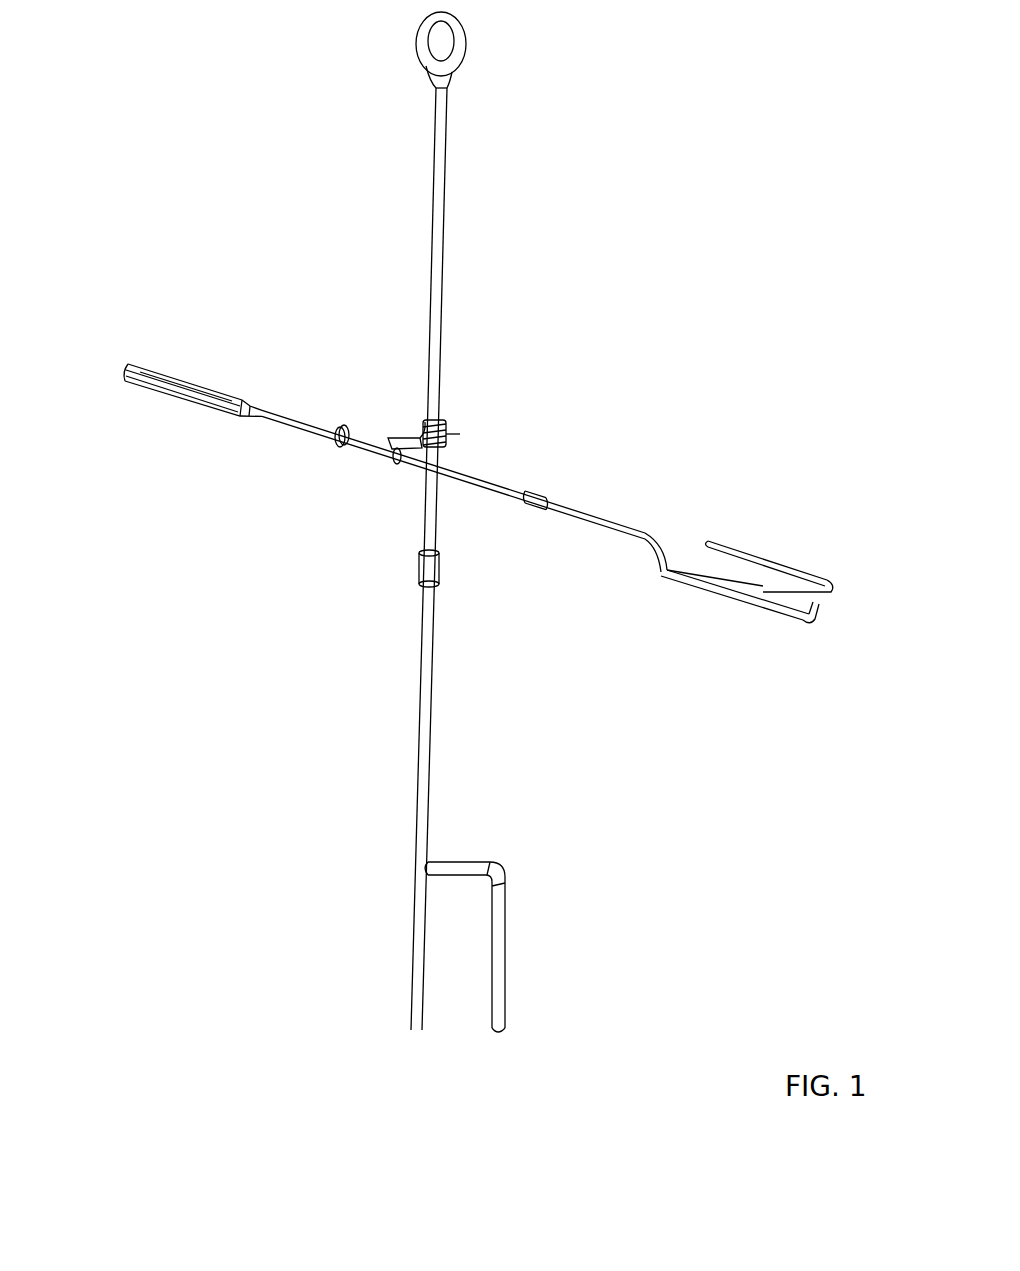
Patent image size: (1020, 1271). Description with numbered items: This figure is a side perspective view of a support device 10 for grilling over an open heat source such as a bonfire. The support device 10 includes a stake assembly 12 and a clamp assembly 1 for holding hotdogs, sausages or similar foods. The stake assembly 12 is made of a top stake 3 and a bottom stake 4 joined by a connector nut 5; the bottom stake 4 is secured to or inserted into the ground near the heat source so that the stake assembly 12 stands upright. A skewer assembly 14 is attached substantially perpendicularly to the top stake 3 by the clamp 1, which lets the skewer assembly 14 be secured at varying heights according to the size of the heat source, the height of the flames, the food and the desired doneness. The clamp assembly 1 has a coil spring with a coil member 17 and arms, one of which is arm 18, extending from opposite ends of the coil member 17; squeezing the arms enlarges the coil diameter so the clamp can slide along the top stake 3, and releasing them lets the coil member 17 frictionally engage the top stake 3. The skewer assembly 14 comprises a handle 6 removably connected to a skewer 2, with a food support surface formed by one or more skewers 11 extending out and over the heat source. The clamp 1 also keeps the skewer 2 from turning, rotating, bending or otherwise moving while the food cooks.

The clamp assembly 1 is at (447, 420).
The skewer 2 is at (646, 529).
The top stake 3 is at (441, 234).
The bottom stake 4 is at (424, 757).
The connector nut 5 is at (443, 573).
The handle 6 is at (194, 390).
The support device 10 is at (113, 428).
The skewers 11 is at (830, 580).
The stake assembly 12 is at (465, 655).
The skewer assembly 14 is at (338, 420).
The coil member 17 is at (447, 434).
The arm 18 is at (395, 440).